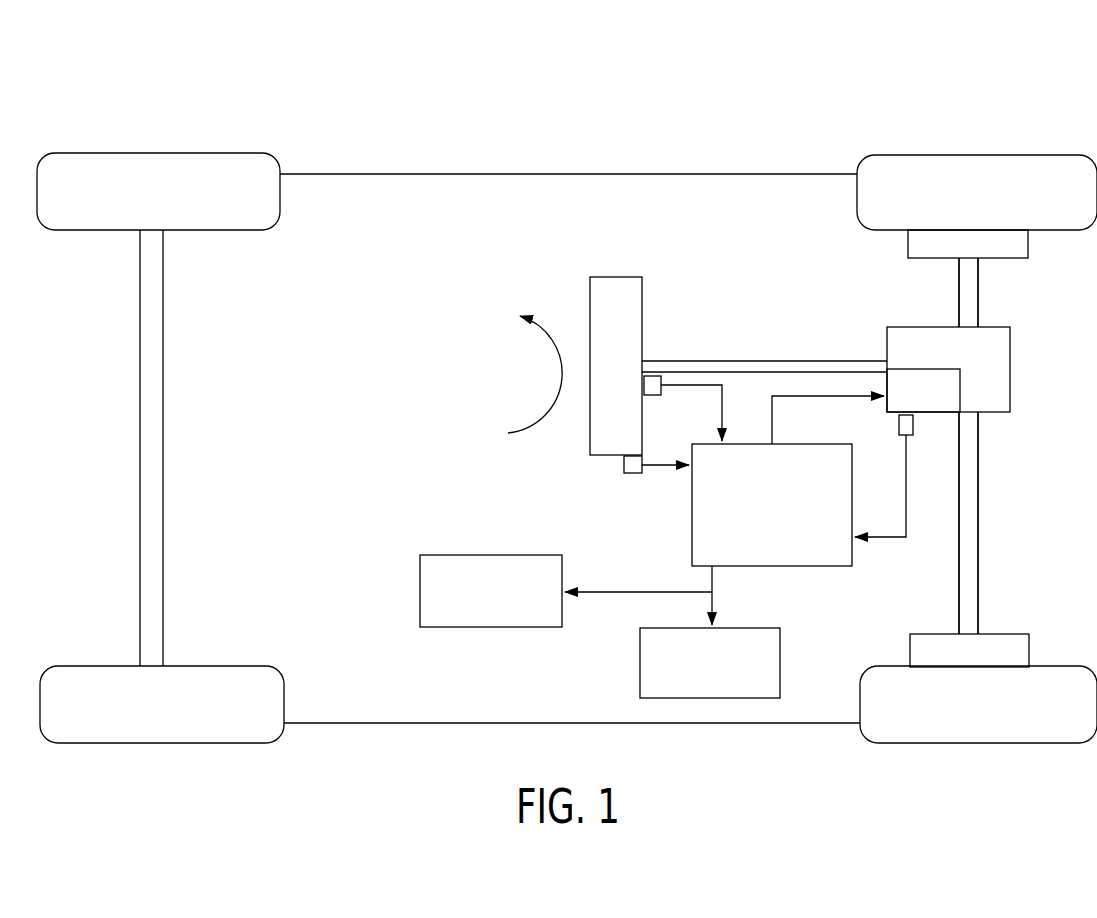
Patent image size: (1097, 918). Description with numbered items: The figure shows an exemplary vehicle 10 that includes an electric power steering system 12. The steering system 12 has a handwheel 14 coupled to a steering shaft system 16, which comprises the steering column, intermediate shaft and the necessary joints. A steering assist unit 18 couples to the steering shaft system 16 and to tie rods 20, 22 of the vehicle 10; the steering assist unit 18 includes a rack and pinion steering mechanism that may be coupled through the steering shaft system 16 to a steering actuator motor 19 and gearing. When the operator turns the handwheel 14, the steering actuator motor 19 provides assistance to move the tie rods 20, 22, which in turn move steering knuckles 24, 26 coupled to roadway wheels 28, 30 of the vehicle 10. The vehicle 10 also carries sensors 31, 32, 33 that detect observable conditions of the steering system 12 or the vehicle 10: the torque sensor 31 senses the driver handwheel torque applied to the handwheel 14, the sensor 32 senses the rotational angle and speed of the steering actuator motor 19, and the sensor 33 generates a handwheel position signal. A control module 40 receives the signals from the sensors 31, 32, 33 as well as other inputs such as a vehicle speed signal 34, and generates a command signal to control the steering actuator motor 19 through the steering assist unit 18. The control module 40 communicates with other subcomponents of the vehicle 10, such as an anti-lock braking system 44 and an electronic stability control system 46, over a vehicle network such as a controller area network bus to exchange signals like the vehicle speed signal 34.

The vehicle 10 is at (609, 106).
The steering system 12 is at (732, 266).
The handwheel 14 is at (617, 277).
The steering shaft system 16 is at (738, 360).
The steering assist unit 18 is at (1011, 360).
The steering actuator motor 19 is at (928, 368).
The tie rod 20 is at (980, 300).
The tie rod 22 is at (980, 489).
The steering knuckle 24 is at (905, 241).
The steering knuckle 26 is at (930, 634).
The roadway wheel 28 is at (1020, 155).
The roadway wheel 30 is at (1038, 666).
The torque sensor 31 is at (650, 396).
The motor angle and speed sensor 32 is at (905, 437).
The handwheel position sensor 33 is at (632, 474).
The vehicle speed signal 34 is at (820, 570).
The control module 40 is at (802, 443).
The Anti-lock Braking System (ABS) 44 is at (450, 555).
The Electronic Stability Control (ESC) system 46 is at (640, 672).